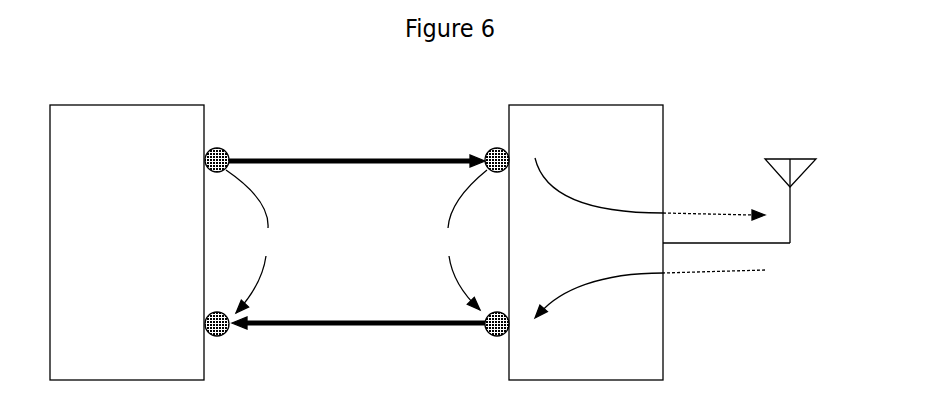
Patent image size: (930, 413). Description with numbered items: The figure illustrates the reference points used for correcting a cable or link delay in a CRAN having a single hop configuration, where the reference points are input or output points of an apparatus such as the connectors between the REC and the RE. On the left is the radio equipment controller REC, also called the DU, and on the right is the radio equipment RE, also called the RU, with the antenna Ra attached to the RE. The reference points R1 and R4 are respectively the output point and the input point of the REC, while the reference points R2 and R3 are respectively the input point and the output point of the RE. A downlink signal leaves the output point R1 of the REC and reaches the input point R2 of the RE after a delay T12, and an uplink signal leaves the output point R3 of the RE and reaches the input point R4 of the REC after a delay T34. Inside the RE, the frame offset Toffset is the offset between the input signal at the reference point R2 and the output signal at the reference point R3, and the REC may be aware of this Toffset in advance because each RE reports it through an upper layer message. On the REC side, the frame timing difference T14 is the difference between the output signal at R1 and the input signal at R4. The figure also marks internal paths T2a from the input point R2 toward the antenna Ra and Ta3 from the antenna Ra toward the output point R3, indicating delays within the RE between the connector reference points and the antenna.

The radio equipment controller REC is at (127, 242).
The radio equipment RE is at (586, 242).
The output point of REC R1 is at (220, 145).
The input point of RE R2 is at (496, 145).
The output point of RE R3 is at (496, 310).
The input point of REC R4 is at (220, 310).
The antenna Ra is at (739, 187).
The downlink delay T12 is at (357, 150).
The uplink delay T34 is at (358, 313).
The frame timing difference T14 is at (260, 241).
The frame offset Toffset is at (445, 240).
The delay from R2 to antenna T2a is at (650, 189).
The delay from antenna to R3 Ta3 is at (650, 294).